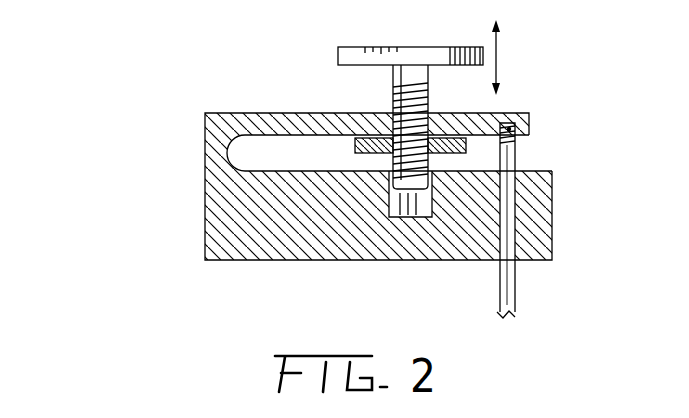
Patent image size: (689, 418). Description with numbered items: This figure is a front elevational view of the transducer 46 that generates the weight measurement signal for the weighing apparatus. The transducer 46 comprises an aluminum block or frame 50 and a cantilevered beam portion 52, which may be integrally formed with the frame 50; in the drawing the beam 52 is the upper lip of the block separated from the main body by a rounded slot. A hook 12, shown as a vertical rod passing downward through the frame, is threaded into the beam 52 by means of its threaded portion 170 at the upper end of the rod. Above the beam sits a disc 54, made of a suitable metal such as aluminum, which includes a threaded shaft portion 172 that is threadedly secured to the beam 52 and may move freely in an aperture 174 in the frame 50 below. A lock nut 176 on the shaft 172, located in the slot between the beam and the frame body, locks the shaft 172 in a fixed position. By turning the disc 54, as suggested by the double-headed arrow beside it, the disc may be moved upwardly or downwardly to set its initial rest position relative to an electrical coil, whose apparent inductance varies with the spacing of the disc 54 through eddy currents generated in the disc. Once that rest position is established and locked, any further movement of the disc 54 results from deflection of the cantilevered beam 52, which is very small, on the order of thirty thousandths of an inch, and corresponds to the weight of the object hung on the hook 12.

The hook 12 is at (505, 290).
The transducer 46 is at (163, 136).
The frame 50 is at (204, 212).
The cantilevered beam portion 52 is at (268, 122).
The disc 54 is at (352, 56).
The threaded portion 170 is at (511, 128).
The threaded shaft portion 172 is at (397, 82).
The aperture 174 is at (390, 214).
The lock nut 176 is at (353, 147).